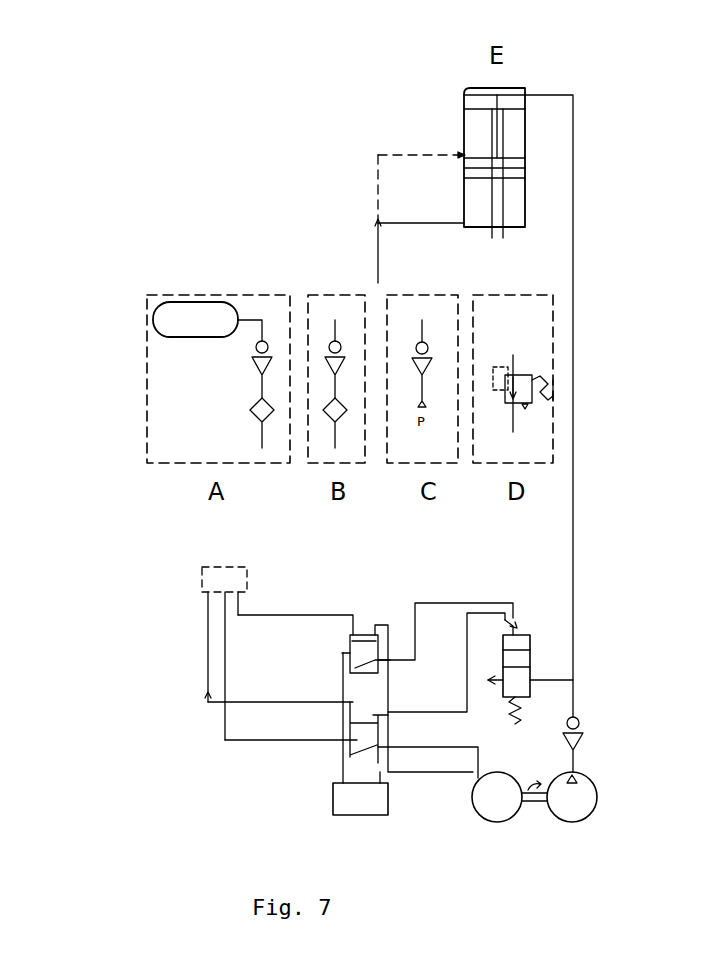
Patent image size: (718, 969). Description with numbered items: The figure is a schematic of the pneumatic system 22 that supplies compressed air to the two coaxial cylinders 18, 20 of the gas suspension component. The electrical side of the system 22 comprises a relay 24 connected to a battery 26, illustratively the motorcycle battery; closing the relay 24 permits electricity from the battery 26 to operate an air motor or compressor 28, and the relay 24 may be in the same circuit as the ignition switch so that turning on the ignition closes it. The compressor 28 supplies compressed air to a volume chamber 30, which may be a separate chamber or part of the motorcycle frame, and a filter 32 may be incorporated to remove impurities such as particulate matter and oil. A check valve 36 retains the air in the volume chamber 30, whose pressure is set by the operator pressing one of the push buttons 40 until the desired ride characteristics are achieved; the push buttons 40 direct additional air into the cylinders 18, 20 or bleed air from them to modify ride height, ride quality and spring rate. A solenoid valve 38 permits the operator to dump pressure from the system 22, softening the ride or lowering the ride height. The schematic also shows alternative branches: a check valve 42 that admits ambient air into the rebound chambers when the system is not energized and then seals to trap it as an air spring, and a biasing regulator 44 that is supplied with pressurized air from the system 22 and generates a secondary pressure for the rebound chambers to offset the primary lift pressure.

The cylinder 18 is at (515, 136).
The cylinder 20 is at (515, 202).
The system 22 is at (100, 713).
The relay 24 is at (360, 630).
The battery 26 is at (332, 803).
The compressor 28 is at (505, 823).
The volume chamber 30 is at (193, 309).
The filter 32 is at (250, 410).
The check valve 36 is at (247, 362).
The solenoid valve 38 is at (525, 637).
The push buttons 40 is at (195, 570).
The check valve 42 is at (328, 380).
The biasing regulator 44 is at (528, 367).